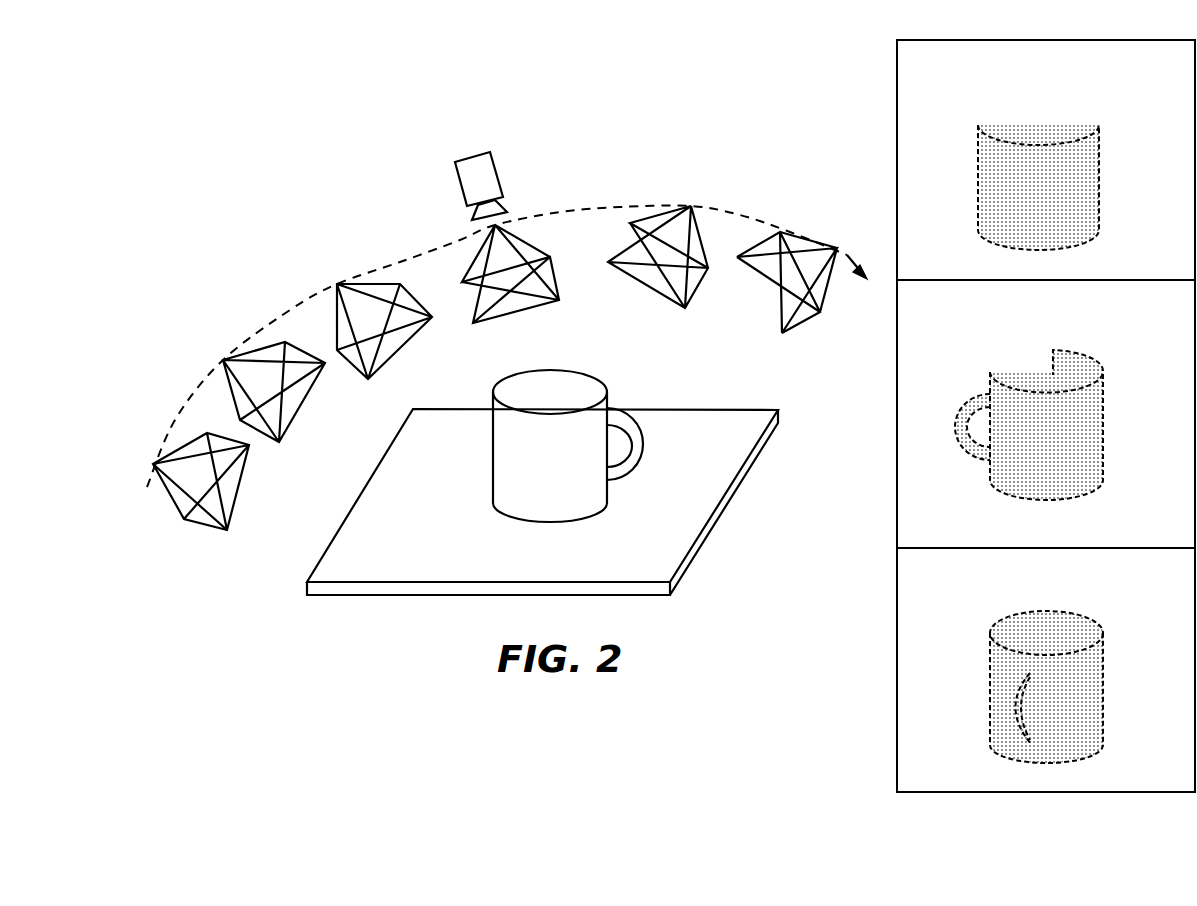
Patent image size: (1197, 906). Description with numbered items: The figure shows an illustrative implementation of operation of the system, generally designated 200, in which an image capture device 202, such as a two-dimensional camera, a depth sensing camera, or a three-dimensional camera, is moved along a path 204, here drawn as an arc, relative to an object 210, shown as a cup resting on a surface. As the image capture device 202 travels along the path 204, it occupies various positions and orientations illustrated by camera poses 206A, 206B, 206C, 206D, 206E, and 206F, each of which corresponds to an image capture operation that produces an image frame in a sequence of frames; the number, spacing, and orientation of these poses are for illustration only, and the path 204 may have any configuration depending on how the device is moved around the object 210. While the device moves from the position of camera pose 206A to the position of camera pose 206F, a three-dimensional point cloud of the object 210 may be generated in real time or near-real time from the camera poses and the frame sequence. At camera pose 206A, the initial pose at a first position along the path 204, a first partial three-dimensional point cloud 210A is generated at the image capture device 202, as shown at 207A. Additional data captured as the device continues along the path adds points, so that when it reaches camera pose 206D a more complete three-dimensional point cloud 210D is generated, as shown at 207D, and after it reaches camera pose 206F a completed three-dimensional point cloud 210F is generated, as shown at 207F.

The illustrative implementation of operation of the system 200 is at (203, 131).
The image capture device 202 is at (491, 152).
The path 204 is at (604, 206).
The camera pose 206A is at (162, 456).
The camera pose 206B is at (232, 355).
The camera pose 206C is at (349, 283).
The camera pose 206D is at (528, 242).
The camera pose 206E is at (703, 244).
The camera pose 206F is at (797, 238).
The object 210 is at (577, 372).
The view of first partial 3D point cloud 207A is at (1046, 160).
The view of more complete 3D point cloud 207D is at (1046, 414).
The view of completed 3D point cloud 207F is at (1046, 670).
The first partial 3D point cloud 210A is at (1096, 125).
The more complete 3D point cloud 210D is at (1080, 355).
The completed 3D point cloud 210F is at (1082, 615).